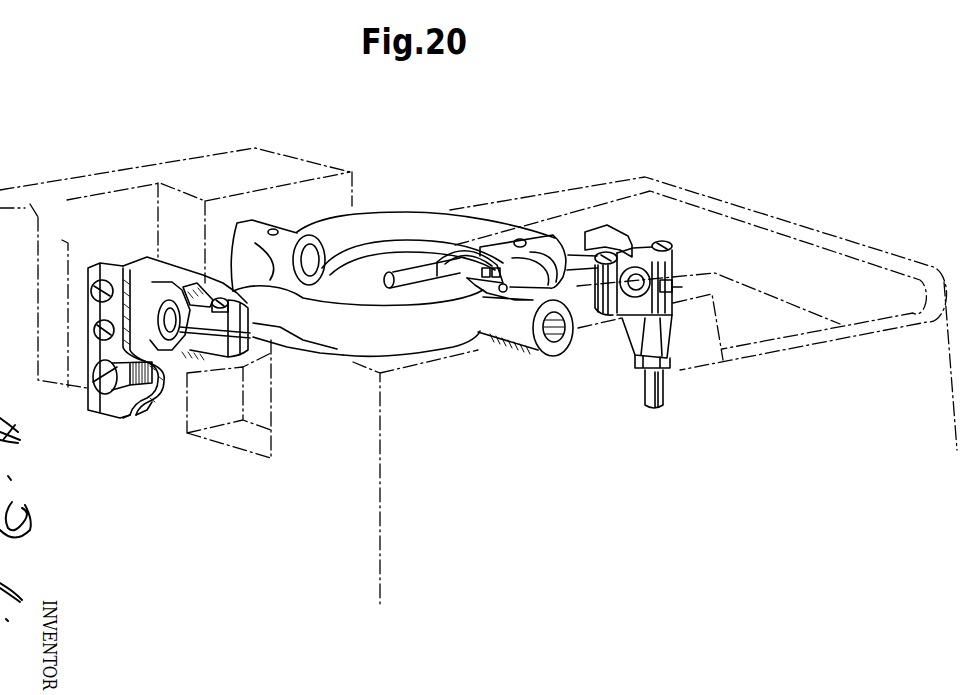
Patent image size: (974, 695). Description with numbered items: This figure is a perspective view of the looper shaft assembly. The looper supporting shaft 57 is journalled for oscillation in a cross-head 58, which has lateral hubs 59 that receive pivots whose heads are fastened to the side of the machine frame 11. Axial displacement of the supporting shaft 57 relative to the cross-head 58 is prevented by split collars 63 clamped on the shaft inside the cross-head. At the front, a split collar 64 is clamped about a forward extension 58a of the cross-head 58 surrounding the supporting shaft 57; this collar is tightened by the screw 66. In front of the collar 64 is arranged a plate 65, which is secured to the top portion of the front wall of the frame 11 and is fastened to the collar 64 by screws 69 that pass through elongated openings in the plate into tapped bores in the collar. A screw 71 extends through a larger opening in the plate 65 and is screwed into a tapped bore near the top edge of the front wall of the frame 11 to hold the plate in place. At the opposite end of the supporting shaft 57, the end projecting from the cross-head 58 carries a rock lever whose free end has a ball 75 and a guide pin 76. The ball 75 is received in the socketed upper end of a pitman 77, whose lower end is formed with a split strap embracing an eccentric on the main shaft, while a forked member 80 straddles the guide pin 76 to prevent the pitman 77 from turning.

The frame 11 is at (758, 232).
The supporting shaft 57 is at (432, 268).
The cross-head 58 is at (374, 232).
The forward extension 58a is at (153, 260).
The lateral hubs 59 is at (522, 333).
The split collars 63 is at (478, 257).
The split collar 64 is at (126, 266).
The plate 65 is at (154, 416).
The screw 66 is at (203, 276).
The screws 69 is at (96, 328).
The screw 71 is at (97, 388).
The ball 75 is at (633, 266).
The guide pin 76 is at (668, 287).
The pitman 77 is at (660, 386).
The forked member 80 is at (620, 298).